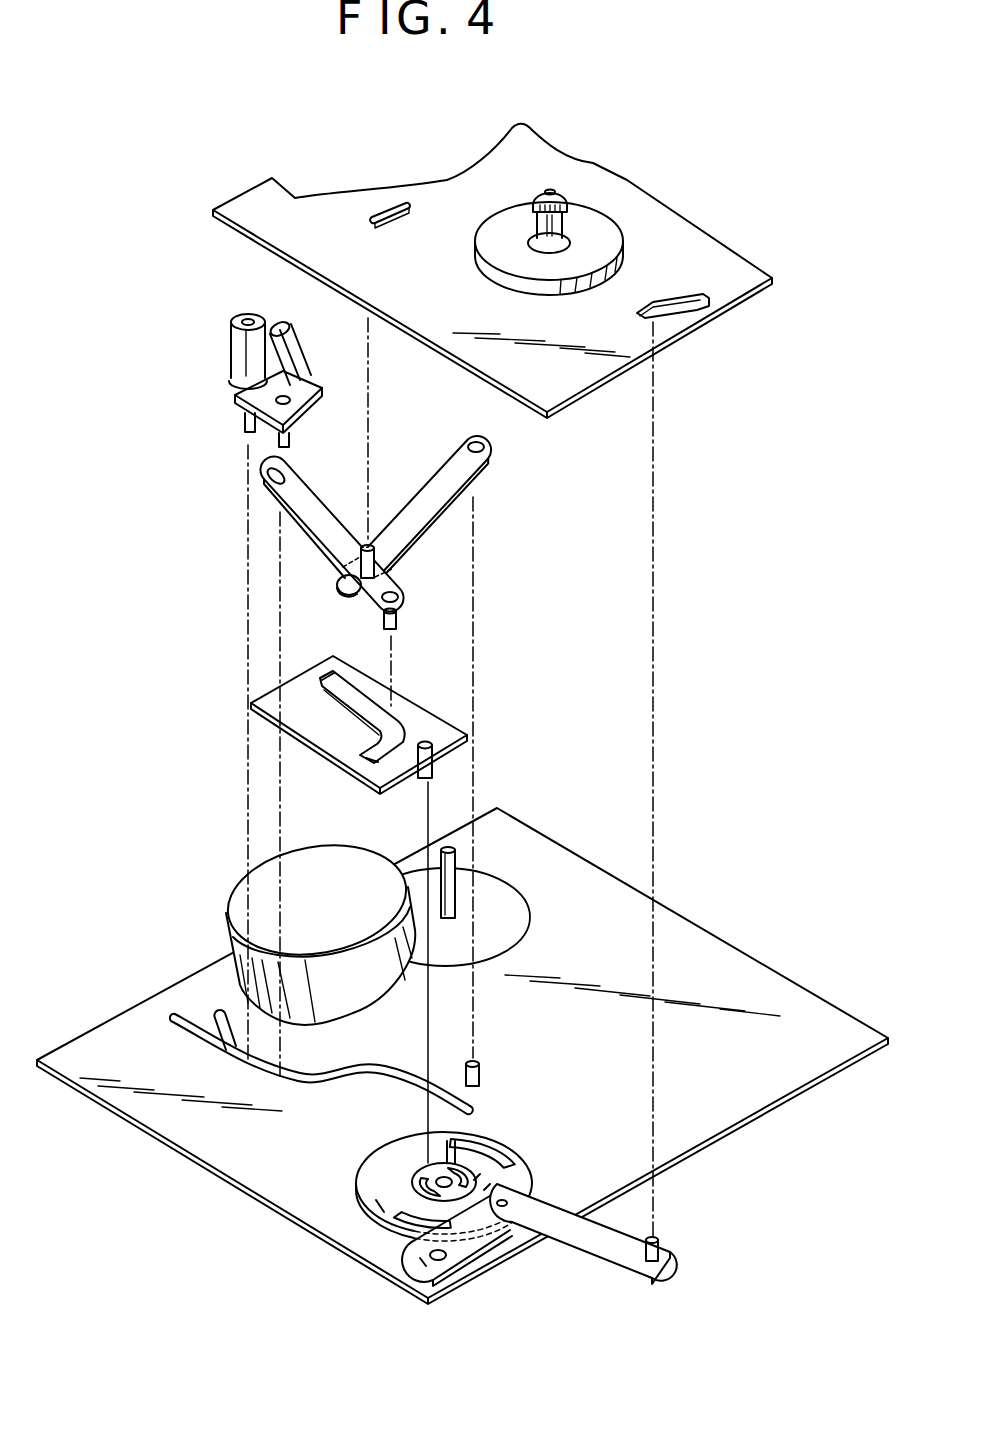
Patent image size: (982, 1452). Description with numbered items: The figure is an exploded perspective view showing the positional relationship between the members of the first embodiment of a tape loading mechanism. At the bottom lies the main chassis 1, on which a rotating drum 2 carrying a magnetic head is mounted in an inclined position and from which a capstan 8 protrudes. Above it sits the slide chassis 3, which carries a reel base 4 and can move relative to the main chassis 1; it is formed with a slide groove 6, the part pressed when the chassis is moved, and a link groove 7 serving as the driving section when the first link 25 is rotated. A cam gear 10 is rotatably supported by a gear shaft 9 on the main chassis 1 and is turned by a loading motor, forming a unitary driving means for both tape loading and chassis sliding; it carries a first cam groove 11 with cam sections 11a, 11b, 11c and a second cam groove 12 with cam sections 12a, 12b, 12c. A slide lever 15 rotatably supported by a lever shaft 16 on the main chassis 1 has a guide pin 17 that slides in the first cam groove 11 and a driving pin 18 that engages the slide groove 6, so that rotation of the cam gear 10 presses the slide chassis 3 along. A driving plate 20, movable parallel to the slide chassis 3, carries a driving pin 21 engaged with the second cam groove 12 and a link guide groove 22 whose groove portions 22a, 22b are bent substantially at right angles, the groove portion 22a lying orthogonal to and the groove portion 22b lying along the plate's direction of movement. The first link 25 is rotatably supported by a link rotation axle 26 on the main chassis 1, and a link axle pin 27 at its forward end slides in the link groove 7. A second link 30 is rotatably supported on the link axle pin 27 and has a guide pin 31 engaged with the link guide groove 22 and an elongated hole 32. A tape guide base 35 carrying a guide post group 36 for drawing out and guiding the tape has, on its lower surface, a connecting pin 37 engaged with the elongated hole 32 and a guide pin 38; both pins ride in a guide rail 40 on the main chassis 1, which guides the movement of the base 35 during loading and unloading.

The main chassis 1 is at (735, 967).
The rotating drum 2 is at (242, 908).
The slide chassis 3 is at (702, 245).
The reel base 4 is at (598, 223).
The slide groove 6 is at (677, 313).
The link groove 7 is at (385, 210).
The capstan 8 is at (453, 860).
The gear shaft 9 is at (380, 1205).
The cam gear 10 is at (413, 1223).
The first cam groove 11 is at (407, 1247).
The cam section 11a is at (393, 1257).
The cam section 11b is at (487, 1187).
The cam section 11c is at (477, 1177).
The second cam groove 12 is at (415, 1178).
The cam section 12a is at (485, 1150).
The cam section 12b is at (443, 1157).
The cam section 12c is at (413, 1177).
The slide lever 15 is at (607, 1247).
The lever shaft 16 is at (440, 1260).
The guide pin 17 is at (507, 1223).
The driving pin 18 is at (663, 1250).
The driving plate 20 is at (337, 742).
The driving pin 21 is at (436, 770).
The link guide groove 22 is at (353, 708).
The groove portion 22a is at (372, 762).
The groove portion 22b is at (333, 690).
The first link 25 is at (413, 527).
The link rotation axle 26 is at (481, 1072).
The link axle pin 27 is at (397, 562).
The second link 30 is at (323, 530).
The guide pin 31 is at (383, 613).
The elongated hole 32 is at (267, 482).
The tape guide base 35 is at (307, 412).
The guide post group 36 is at (242, 353).
The connecting pin 37 is at (285, 440).
The guide pin 38 is at (247, 423).
The guide rail 40 is at (195, 1033).